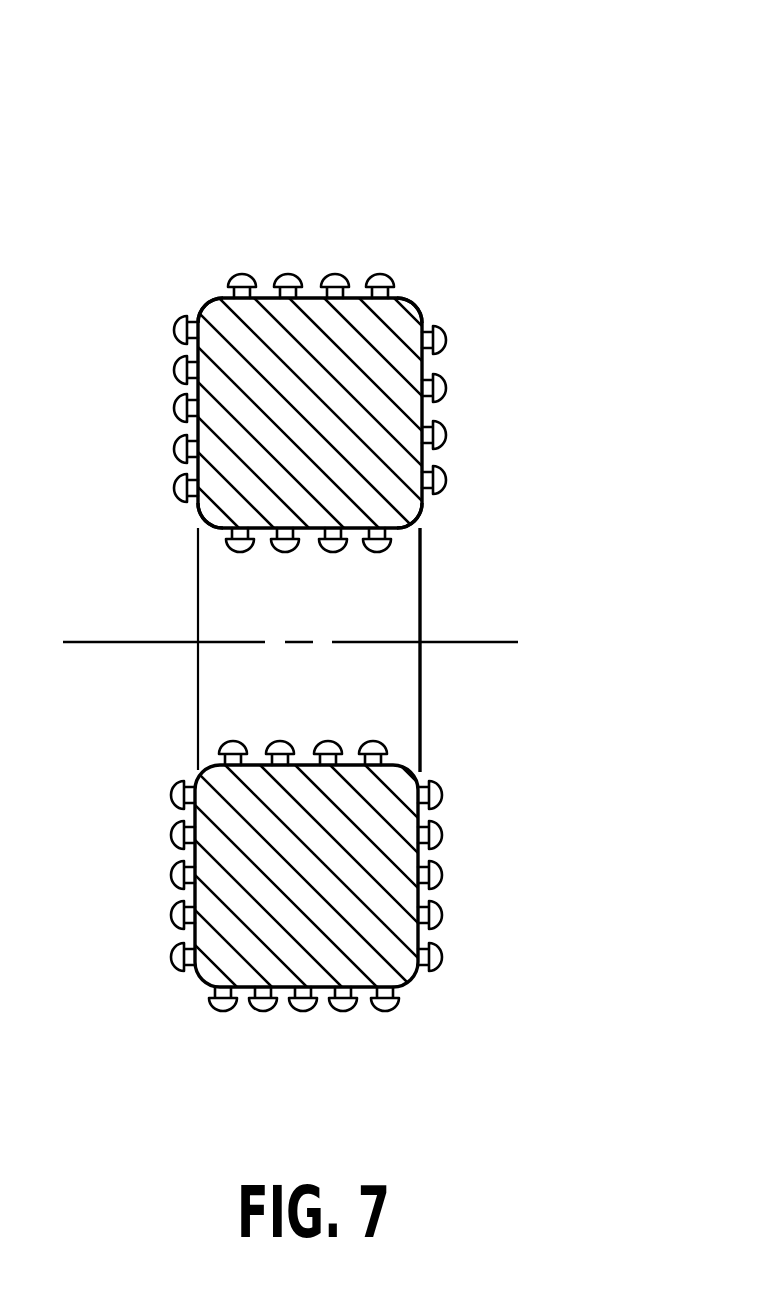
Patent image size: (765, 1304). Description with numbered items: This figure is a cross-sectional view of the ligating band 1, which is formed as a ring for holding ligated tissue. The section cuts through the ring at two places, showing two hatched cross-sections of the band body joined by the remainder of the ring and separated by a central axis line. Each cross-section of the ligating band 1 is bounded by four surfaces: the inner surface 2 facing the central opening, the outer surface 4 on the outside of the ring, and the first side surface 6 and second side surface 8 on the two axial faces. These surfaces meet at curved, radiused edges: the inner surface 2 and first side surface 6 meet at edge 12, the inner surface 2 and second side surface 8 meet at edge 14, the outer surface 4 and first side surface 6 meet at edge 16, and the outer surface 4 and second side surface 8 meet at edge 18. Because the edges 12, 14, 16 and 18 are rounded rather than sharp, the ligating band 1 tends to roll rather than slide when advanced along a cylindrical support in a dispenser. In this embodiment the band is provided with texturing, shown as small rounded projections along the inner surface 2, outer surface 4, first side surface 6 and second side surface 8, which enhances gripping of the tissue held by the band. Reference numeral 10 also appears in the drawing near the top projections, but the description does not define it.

The ligating band 1 is at (492, 118).
The inner surface 2 is at (305, 532).
The outer surface 4 is at (259, 292).
The first side surface 6 is at (187, 427).
The second side surface 8 is at (427, 417).
The top terminal leads 10 is at (286, 291).
The edge 12 is at (197, 530).
The edge 14 is at (418, 523).
The edge 16 is at (207, 305).
The edge 18 is at (410, 303).